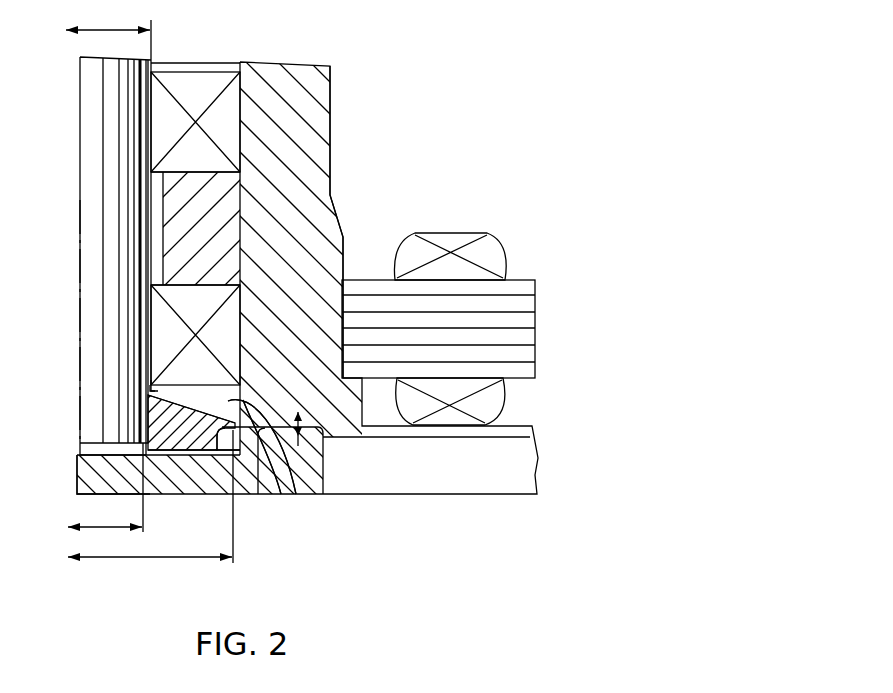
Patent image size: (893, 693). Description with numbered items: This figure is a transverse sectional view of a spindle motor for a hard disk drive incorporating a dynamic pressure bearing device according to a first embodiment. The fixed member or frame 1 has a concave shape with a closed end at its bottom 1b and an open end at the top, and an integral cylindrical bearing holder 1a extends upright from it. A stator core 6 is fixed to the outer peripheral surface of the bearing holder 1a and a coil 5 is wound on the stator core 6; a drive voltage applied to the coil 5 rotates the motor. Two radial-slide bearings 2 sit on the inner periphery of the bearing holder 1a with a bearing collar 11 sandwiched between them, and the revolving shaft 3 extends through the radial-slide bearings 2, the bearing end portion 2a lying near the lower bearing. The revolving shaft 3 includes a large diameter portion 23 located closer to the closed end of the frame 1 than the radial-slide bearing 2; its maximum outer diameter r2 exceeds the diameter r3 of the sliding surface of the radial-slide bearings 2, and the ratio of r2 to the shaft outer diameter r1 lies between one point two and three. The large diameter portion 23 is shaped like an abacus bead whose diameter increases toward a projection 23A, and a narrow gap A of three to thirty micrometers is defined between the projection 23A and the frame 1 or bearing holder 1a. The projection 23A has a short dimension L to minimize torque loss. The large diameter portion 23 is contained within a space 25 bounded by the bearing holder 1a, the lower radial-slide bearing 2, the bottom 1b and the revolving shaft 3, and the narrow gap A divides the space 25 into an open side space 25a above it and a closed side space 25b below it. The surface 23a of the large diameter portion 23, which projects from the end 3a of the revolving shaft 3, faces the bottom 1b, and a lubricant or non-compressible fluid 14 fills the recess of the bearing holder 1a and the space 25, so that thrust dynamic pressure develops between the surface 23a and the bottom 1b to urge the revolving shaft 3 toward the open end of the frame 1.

The frame 1 is at (318, 499).
The bearing holder 1a is at (318, 218).
The bottom of the frame 1b is at (88, 478).
The radial-slide bearing 2 is at (197, 88).
The coil end portion 2a is at (150, 388).
The revolving shaft 3 is at (80, 199).
The end of the revolving shaft 3a is at (80, 450).
The coil 5 is at (483, 257).
The stator core 6 is at (523, 305).
The bearing collar 11 is at (160, 243).
The lubricant or non-compressible fluid 14 is at (180, 398).
The large diameter portion 23 is at (147, 432).
The surface of the large diameter portion 23a is at (160, 455).
The projection 23A is at (220, 438).
The space 25 is at (243, 391).
The open side space 25a is at (296, 494).
The closed side space 25b is at (215, 452).
The narrow gap A is at (224, 430).
The dimension of the projection L is at (327, 437).
The outer diameter of the revolving shaft r1 is at (105, 487).
The maximum outer diameter of the large diameter portion r2 is at (150, 496).
The diameter of the sliding surface of the radial-slide bearings r3 is at (108, 19).